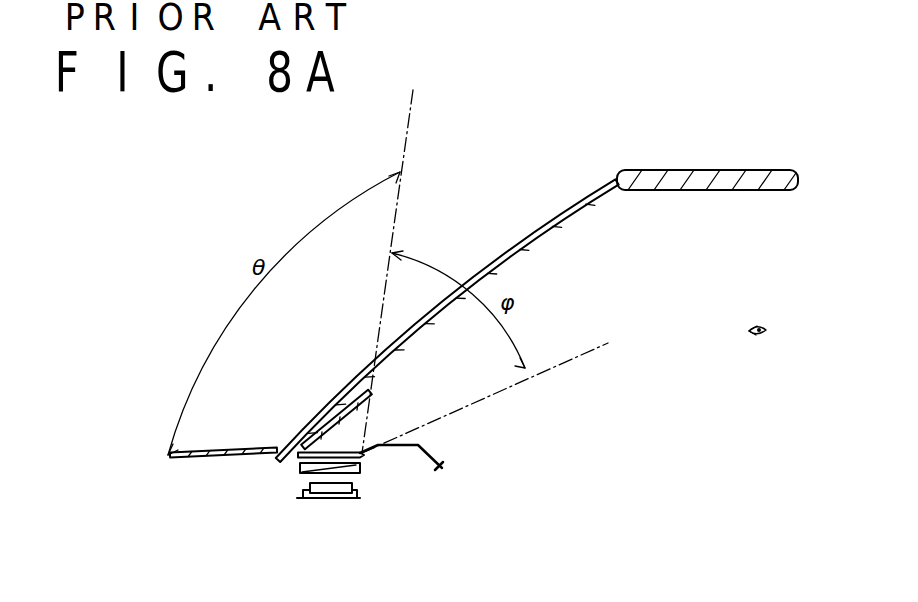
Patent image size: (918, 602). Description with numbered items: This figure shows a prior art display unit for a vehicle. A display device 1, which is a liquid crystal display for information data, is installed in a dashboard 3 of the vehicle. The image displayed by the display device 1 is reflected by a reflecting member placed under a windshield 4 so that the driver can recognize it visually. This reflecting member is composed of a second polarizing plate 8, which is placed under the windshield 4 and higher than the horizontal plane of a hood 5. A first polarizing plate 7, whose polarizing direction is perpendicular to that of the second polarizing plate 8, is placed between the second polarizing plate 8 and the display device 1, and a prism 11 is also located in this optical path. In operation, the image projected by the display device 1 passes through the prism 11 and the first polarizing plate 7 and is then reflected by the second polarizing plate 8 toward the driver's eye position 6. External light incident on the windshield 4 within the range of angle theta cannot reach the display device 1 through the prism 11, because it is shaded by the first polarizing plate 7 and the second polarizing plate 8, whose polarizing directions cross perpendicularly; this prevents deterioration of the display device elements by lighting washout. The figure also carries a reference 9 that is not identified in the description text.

The display device 1 is at (320, 500).
The dashboard 3 is at (446, 461).
The windshield 4 is at (522, 249).
The hood 5 is at (235, 446).
The driver's eye position 6 is at (758, 328).
The first polarizing plate 7 is at (364, 459).
The second polarizing plate 8 is at (358, 406).
The light path 9 is at (290, 477).
The prism 11 is at (354, 475).